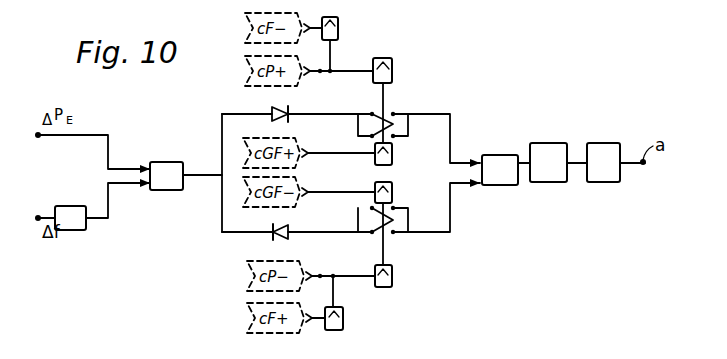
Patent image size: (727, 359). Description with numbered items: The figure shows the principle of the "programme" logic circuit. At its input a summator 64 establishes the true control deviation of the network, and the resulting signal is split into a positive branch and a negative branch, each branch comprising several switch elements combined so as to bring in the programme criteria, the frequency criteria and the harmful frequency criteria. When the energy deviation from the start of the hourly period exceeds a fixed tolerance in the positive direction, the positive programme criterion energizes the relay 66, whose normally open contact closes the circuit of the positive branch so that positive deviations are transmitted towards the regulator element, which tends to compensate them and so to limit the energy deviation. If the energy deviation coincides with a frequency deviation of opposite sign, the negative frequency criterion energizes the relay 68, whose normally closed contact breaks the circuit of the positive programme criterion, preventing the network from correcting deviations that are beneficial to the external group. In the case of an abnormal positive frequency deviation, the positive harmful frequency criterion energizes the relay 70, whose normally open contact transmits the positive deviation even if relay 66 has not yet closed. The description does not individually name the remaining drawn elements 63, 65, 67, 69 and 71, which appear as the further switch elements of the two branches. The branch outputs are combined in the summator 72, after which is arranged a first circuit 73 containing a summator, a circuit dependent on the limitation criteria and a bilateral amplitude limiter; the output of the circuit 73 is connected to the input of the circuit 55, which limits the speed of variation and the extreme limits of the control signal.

The circuit 55 is at (612, 143).
The summing device 63 is at (160, 162).
The summator 64 is at (283, 108).
The diode 65 is at (283, 224).
The relay 66 is at (384, 98).
The relay 67 is at (389, 265).
The relay 68 is at (353, 62).
The relay 69 is at (340, 296).
The relay 70 is at (395, 138).
The relay 71 is at (393, 207).
The summator 72 is at (489, 156).
The first circuit 73 is at (557, 143).